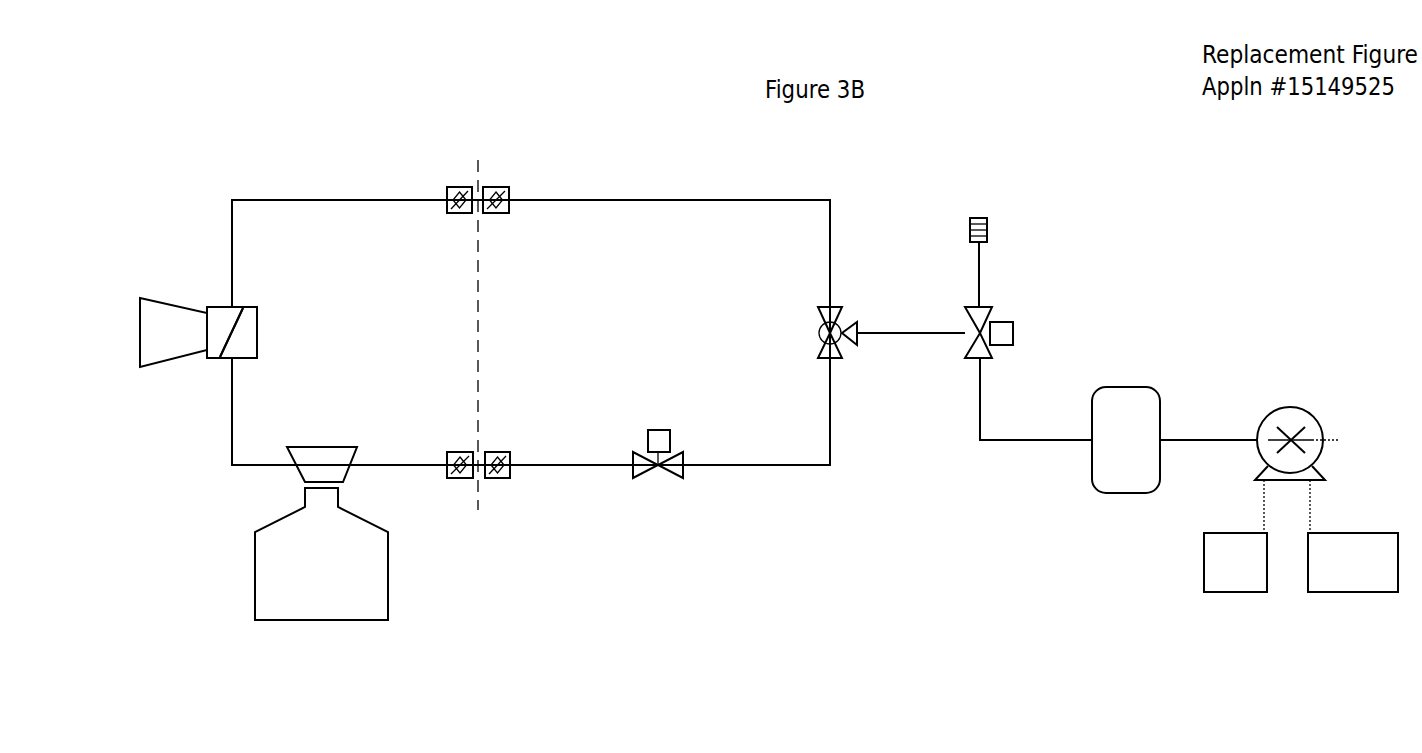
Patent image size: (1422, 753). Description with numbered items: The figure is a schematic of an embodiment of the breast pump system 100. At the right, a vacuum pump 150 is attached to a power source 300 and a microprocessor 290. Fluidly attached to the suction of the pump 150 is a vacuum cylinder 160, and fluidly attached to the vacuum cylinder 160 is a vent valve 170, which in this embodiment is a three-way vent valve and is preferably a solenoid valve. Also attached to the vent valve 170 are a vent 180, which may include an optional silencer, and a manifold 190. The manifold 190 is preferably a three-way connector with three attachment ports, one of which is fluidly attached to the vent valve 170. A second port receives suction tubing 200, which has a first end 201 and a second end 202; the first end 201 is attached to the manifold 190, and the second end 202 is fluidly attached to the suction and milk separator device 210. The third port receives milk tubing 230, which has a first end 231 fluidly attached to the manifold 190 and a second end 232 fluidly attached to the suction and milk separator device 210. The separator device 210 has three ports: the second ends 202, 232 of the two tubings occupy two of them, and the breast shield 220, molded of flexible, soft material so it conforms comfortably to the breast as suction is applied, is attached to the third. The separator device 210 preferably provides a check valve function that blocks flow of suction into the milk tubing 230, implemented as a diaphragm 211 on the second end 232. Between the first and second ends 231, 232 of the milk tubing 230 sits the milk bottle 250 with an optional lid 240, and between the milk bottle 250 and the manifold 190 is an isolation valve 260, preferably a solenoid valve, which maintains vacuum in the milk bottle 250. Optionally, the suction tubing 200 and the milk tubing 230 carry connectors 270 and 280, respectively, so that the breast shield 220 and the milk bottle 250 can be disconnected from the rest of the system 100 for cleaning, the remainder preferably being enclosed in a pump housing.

The breast pump system 100 is at (1190, 212).
The vacuum pump 150 is at (1291, 404).
The vacuum cylinder 160 is at (1113, 387).
The vent valve 170 is at (985, 308).
The vent 180 is at (988, 220).
The manifold 190 is at (843, 308).
The suction tubing 200 is at (330, 197).
The first end 201 is at (826, 312).
The second end 202 is at (227, 300).
The suction and milk separator device 210 is at (258, 334).
The diaphragm 211 is at (234, 341).
The breast shield 220 is at (160, 298).
The milk tubing 230 is at (253, 468).
The first end 231 is at (834, 362).
The second end 232 is at (222, 358).
The lid 240 is at (322, 445).
The milk bottle 250 is at (386, 583).
The isolation valve 260 is at (675, 473).
The connector 270 is at (496, 186).
The connector 280 is at (497, 480).
The microprocessor 290 is at (1253, 594).
The power source 300 is at (1350, 594).